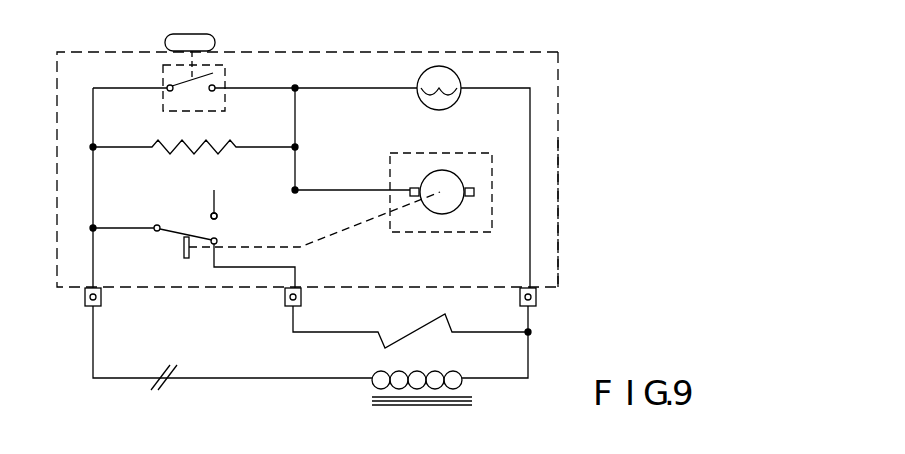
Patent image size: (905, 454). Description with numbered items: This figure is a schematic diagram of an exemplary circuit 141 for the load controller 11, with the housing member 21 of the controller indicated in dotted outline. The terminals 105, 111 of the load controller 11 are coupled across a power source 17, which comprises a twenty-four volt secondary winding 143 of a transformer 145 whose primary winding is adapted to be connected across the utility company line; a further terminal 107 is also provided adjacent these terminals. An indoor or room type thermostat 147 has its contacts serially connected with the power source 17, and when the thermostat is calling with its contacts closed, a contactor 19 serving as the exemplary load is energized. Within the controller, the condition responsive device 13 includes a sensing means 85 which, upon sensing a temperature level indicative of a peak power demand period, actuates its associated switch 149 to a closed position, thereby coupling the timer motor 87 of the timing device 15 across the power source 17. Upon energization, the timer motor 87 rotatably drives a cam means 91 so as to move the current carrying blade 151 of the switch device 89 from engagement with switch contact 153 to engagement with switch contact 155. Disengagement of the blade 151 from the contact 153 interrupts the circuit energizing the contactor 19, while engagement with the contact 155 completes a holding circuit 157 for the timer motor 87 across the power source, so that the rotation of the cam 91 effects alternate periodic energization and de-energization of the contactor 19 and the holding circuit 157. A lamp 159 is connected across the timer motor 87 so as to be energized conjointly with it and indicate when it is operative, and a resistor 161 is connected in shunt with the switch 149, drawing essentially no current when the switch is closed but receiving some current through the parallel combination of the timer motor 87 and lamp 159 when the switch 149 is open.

The load controller 11 is at (566, 79).
The condition responsive device 13 is at (232, 76).
The sequence timing device 15 is at (396, 146).
The power source 17 is at (421, 382).
The contactor 19 is at (413, 334).
The housing member 21 is at (558, 136).
The sensing means 85 is at (212, 36).
The timer motor 87 is at (450, 170).
The switch device 89 is at (155, 186).
The cam means 91 is at (183, 257).
The terminal 105 is at (85, 300).
The terminal 107 is at (285, 300).
The third terminal 111 is at (538, 301).
The circuit 141 is at (542, 197).
The secondary winding 143 is at (430, 375).
The transformer 145 is at (465, 405).
The room thermostat 147 is at (163, 370).
The switch 149 is at (168, 85).
The switch blade 151 is at (171, 224).
The switch contact 153 is at (218, 240).
The switch contact 155 is at (218, 215).
The holding circuit 157 is at (263, 184).
The lamp 159 is at (457, 80).
The resistor 161 is at (175, 143).